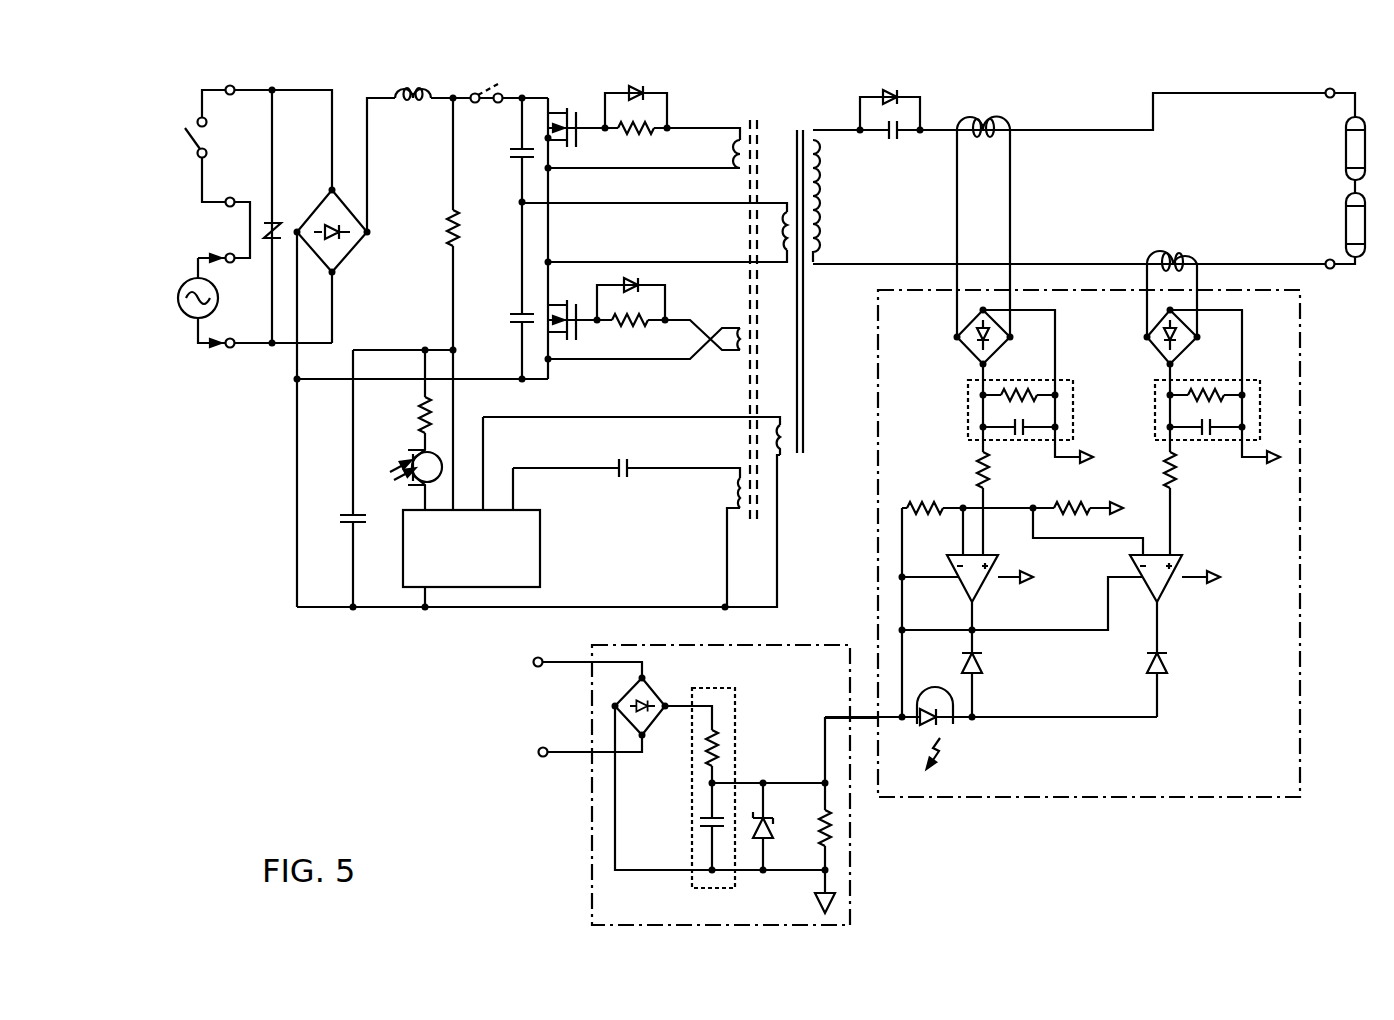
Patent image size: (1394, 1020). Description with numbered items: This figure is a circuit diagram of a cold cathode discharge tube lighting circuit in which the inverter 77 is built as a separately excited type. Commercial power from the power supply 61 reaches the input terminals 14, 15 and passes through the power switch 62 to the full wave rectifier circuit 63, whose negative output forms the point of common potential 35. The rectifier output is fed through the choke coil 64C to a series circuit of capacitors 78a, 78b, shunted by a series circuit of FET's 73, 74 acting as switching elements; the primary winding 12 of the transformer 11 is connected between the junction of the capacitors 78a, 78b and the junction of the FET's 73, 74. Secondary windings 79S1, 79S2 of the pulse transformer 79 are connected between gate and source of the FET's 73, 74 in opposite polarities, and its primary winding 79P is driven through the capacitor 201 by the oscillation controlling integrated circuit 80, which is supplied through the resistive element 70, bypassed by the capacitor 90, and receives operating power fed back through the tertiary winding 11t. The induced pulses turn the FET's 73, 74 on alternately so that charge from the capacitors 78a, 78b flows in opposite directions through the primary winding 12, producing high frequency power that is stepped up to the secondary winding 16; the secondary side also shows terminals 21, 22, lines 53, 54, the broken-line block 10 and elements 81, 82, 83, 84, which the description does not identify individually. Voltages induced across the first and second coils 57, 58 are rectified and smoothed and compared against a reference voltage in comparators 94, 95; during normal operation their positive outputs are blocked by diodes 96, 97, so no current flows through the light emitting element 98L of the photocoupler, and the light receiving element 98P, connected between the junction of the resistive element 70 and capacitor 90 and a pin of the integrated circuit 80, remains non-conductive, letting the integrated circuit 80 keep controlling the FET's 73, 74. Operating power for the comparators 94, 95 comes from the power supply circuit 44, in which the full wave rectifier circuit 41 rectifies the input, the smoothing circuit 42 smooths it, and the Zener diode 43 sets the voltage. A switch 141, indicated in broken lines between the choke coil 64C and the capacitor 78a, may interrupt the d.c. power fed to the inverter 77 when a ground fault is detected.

The control circuit 10 is at (1086, 798).
The transformer 11 is at (802, 124).
The tertiary winding 11t is at (778, 456).
The primary winding 12 is at (778, 266).
The input terminal 14 is at (234, 265).
The input terminal 15 is at (234, 350).
The secondary winding 16 is at (826, 222).
The lamp output terminal 21 is at (1334, 90).
The lamp output terminal 22 is at (1334, 270).
The point of common potential 35 is at (294, 388).
The full wave rectifier circuit 41 is at (654, 730).
The smoothing circuit 42 is at (738, 720).
The Zener diode 43 is at (774, 822).
The power supply circuit 44 is at (590, 828).
The output line 53 is at (1062, 128).
The output line 54 is at (1062, 262).
The first coil 57 is at (990, 118).
The second coil 58 is at (1174, 258).
The commercial power supply 61 is at (186, 342).
The power switch 62 is at (198, 142).
The full wave rectifier circuit 63 is at (352, 252).
The choke coil 64C is at (406, 88).
The resistive element 70 is at (448, 254).
The FET 73 is at (582, 100).
The FET 74 is at (582, 298).
The inverter 77 is at (720, 250).
The capacitor 78a is at (514, 168).
The capacitor 78b is at (518, 308).
The pulse transformer 79 is at (744, 122).
The primary winding 79P is at (730, 498).
The secondary winding 79S1 is at (736, 170).
The secondary winding 79S2 is at (738, 364).
The oscillation controlling integrated circuit 80 is at (542, 553).
The rectifier 81 is at (962, 350).
The rectifier 82 is at (1150, 350).
The RC filter 83 is at (968, 406).
The RC filter 84 is at (1154, 406).
The capacitor 90 is at (348, 510).
The comparator 94 is at (985, 588).
The comparator 95 is at (1170, 588).
The diode 96 is at (984, 664).
The diode 97 is at (1168, 664).
The light emitting element 98L is at (958, 730).
The light receiving element 98P is at (408, 454).
The switch 141 is at (476, 90).
The capacitor 201 is at (630, 466).